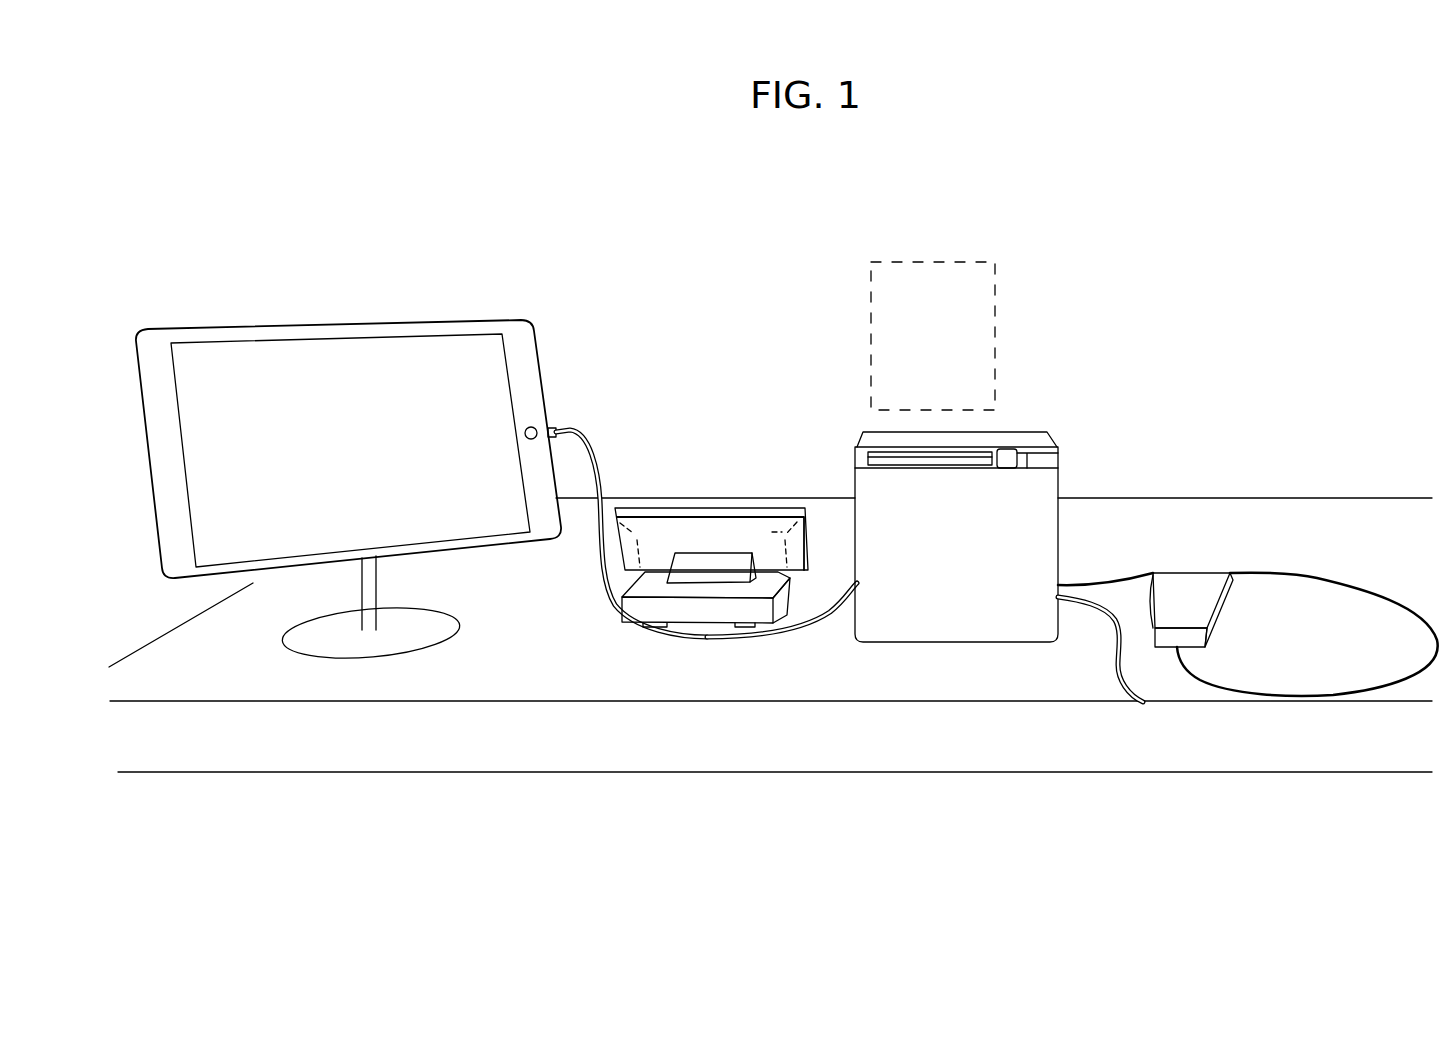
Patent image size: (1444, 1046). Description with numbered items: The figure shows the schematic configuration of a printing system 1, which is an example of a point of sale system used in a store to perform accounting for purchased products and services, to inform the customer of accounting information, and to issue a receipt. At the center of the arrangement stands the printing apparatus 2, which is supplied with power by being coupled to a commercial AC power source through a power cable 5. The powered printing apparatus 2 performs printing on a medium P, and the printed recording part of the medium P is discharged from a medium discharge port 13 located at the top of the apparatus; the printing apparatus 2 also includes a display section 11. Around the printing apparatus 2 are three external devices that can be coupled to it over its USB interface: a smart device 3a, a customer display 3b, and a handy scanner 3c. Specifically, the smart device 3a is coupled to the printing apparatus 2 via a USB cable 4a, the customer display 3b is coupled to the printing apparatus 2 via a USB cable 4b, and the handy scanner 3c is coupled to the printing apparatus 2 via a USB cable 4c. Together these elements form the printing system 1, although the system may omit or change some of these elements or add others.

The printing system 1 is at (520, 195).
The printing apparatus 2 is at (948, 620).
The smart device 3a is at (222, 382).
The customer display 3b is at (717, 537).
The handy scanner 3c is at (1197, 592).
The USB cable 4a is at (578, 438).
The USB cable 4b is at (827, 587).
The USB cable 4c is at (1320, 578).
The power cable 5 is at (1117, 662).
The display section 11 is at (987, 463).
The medium discharge port 13 is at (953, 453).
The medium P is at (952, 303).